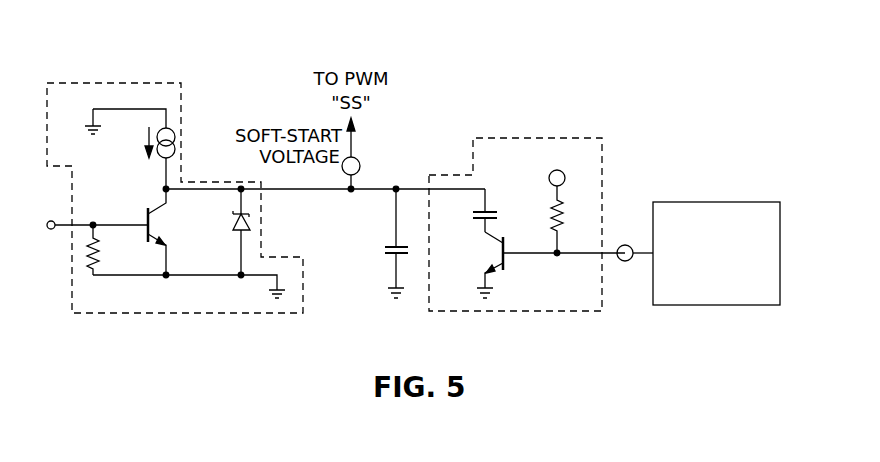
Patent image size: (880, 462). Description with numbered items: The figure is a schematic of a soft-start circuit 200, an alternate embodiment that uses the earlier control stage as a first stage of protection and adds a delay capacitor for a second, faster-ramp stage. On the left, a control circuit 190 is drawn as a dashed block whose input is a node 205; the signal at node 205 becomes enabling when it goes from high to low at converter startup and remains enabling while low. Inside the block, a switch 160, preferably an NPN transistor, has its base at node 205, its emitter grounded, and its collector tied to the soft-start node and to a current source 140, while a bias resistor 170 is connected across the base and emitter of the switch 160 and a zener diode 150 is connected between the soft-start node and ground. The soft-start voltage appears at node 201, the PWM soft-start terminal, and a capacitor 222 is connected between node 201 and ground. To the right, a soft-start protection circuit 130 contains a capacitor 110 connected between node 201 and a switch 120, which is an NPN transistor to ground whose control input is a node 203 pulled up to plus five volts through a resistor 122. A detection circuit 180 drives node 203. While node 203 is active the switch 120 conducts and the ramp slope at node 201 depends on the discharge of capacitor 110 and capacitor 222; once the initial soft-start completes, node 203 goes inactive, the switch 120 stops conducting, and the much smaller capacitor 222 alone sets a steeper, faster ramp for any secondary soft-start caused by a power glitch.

The soft-start circuit 200 is at (658, 74).
The control circuit 190 is at (110, 82).
The current source 140 is at (158, 164).
The node 205 is at (50, 221).
The switch 160 is at (145, 215).
The bias resistor 170 is at (101, 251).
The zener diode 150 is at (239, 232).
The node 201 is at (359, 161).
The capacitor 222 is at (391, 255).
The soft-start protection circuit 130 is at (567, 137).
The capacitor 110 is at (482, 226).
The resistor 122 is at (553, 215).
The switch 120 is at (506, 263).
The node 203 is at (627, 245).
The detection circuit 180 is at (733, 202).